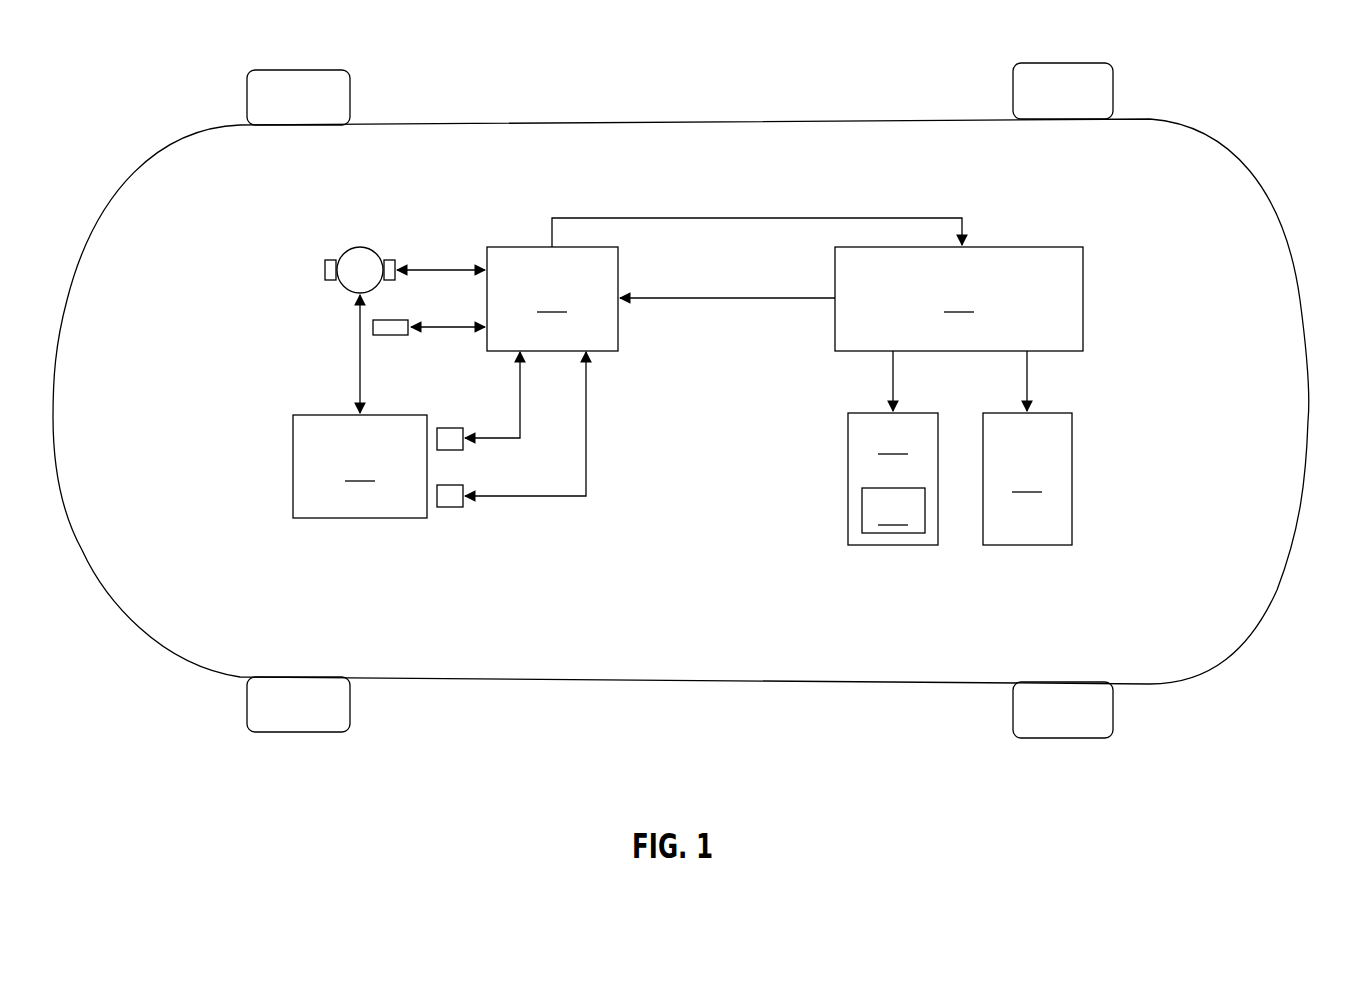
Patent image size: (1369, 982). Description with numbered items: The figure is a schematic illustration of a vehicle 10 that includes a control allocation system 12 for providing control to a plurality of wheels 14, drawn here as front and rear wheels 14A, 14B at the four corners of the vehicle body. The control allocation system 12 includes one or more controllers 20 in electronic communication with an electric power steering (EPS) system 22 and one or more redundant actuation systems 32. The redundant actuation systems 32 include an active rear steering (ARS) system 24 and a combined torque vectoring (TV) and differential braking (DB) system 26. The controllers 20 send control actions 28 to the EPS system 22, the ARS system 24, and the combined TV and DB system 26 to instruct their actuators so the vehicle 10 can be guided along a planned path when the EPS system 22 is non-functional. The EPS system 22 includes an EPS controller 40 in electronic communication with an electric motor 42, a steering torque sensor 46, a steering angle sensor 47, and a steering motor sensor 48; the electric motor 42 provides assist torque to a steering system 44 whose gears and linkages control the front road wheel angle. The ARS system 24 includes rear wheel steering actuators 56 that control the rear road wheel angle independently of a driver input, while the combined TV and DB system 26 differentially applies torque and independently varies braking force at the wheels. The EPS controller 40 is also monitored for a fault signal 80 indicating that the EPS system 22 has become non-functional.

The vehicle 10 is at (704, 402).
The control allocation system 12 is at (1237, 295).
The wheels 14 is at (680, 402).
The front wheels 14A is at (281, 70).
The rear wheels 14B is at (1075, 63).
The controllers 20 is at (959, 299).
The electric power steering system 22 is at (469, 364).
The active rear steering system 24 is at (893, 479).
The combined torque vectoring and differential braking system 26 is at (1088, 471).
The control actions 28 is at (716, 300).
The redundant actuation systems 32 is at (1079, 479).
The EPS controller 40 is at (552, 299).
The electric motor 42 is at (362, 246).
The steering system 44 is at (360, 466).
The steering torque sensor 46 is at (449, 452).
The steering angle sensor 47 is at (449, 508).
The steering motor sensor 48 is at (390, 337).
The rear wheel steering actuators 56 is at (893, 510).
The fault signal 80 is at (730, 221).